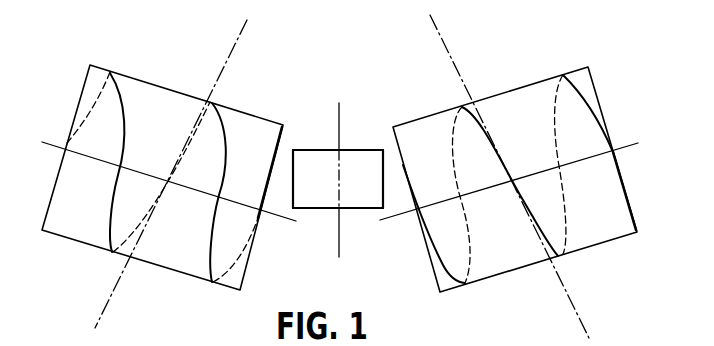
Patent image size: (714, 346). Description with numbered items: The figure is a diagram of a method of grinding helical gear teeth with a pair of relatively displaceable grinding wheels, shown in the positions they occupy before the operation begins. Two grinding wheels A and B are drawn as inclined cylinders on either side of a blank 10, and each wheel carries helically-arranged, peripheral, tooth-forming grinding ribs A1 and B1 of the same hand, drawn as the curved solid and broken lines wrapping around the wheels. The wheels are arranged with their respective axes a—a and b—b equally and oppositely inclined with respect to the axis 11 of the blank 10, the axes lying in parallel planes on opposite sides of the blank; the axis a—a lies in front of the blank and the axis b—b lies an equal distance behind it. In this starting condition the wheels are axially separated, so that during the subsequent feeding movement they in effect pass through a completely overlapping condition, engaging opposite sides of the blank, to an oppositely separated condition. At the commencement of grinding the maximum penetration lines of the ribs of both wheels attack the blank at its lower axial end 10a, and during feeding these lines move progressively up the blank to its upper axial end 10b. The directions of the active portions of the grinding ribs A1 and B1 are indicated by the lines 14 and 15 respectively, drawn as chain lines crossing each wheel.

The grinding wheel A is at (173, 91).
The tooth-forming grinding rib A1 is at (226, 125).
The grinding wheel B is at (525, 88).
The tooth-forming grinding rib B1 is at (580, 95).
The blank 10 is at (372, 173).
The lower axial end of blank 10a is at (367, 208).
The upper axial end of blank 10b is at (312, 150).
The axis of blank 11 is at (342, 125).
The direction line of active portion of grinding rib A1 14 is at (242, 35).
The direction line of active portion of grinding rib B1 15 is at (433, 32).
The axis of grinding wheel A a is at (177, 180).
The axis of grinding wheel B b is at (509, 179).